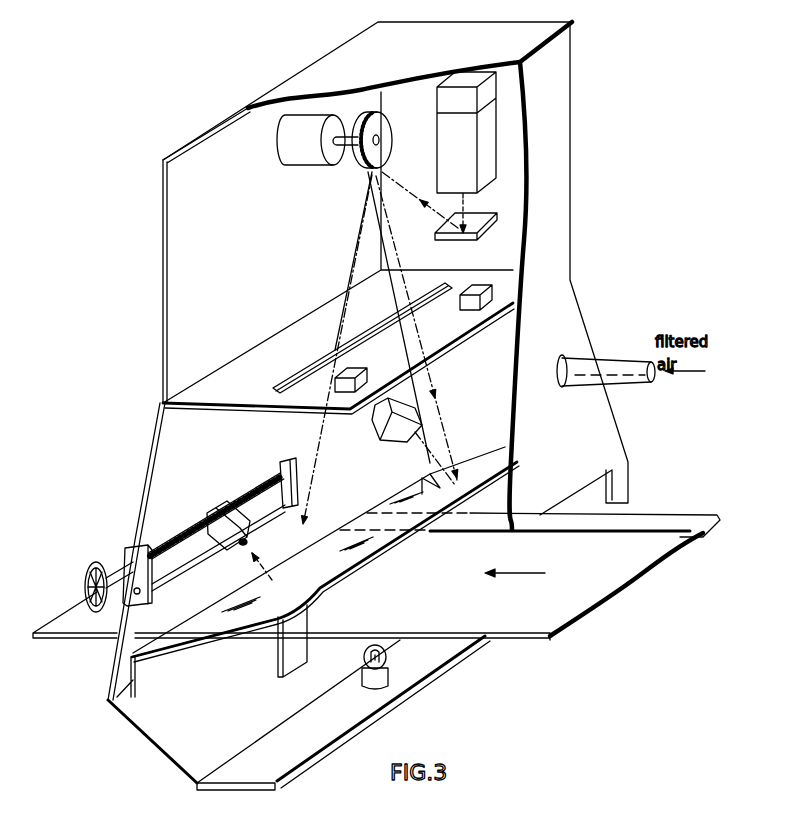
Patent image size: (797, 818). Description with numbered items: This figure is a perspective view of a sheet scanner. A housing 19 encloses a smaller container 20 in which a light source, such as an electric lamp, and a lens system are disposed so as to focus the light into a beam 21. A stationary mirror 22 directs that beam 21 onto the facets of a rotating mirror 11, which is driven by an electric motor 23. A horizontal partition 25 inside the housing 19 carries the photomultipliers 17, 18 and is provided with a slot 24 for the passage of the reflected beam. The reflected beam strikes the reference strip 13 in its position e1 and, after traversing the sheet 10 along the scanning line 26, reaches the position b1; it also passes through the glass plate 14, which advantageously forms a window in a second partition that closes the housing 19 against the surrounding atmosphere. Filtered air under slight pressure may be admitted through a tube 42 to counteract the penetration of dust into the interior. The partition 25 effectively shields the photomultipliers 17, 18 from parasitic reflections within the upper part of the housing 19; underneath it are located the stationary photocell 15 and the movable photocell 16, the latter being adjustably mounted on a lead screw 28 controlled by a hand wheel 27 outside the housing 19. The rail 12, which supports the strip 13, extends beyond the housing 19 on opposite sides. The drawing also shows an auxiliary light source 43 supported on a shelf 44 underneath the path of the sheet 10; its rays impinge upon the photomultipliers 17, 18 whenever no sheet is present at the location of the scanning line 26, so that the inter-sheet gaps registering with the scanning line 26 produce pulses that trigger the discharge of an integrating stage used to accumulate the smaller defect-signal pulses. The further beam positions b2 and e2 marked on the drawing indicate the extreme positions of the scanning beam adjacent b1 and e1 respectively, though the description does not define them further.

The sheet 10 is at (528, 640).
The rotating mirror 11 is at (367, 166).
The rail 12 is at (641, 520).
The reference strip 13 is at (465, 533).
The glass plate 14 is at (172, 648).
The stationary photocell 15 is at (398, 445).
The movable photocell 16 is at (218, 505).
The photomultiplier 17 is at (498, 296).
The photomultiplier 18 is at (349, 393).
The housing 19 is at (571, 163).
The container 20 is at (500, 152).
The beam 21 is at (462, 227).
The stationary mirror 22 is at (480, 238).
The electric motor 23 is at (310, 166).
The slot 24 is at (378, 325).
The horizontal partition 25 is at (520, 328).
The scanning line 26 is at (378, 570).
The hand wheel 27 is at (97, 578).
The lead screw 28 is at (256, 495).
The tube 42 is at (618, 377).
The auxiliary light source 43 is at (383, 666).
The shelf 44 is at (372, 708).
The beam position b1 is at (357, 246).
The light beam b2 is at (257, 569).
The beam position e1 is at (440, 418).
The light beam e2 is at (409, 433).